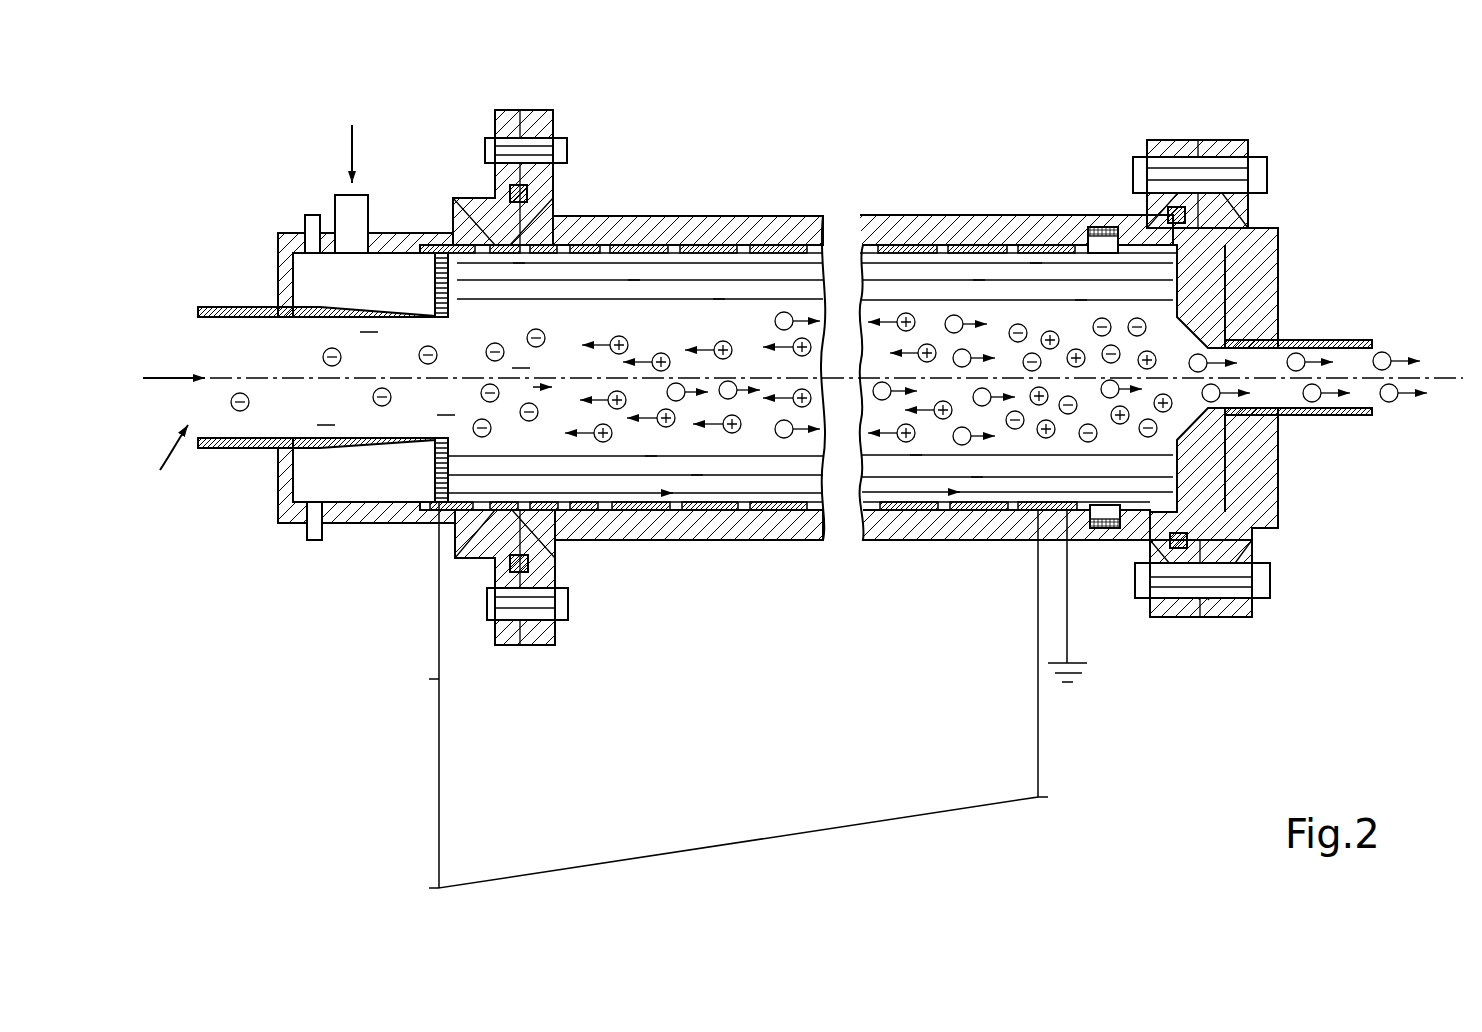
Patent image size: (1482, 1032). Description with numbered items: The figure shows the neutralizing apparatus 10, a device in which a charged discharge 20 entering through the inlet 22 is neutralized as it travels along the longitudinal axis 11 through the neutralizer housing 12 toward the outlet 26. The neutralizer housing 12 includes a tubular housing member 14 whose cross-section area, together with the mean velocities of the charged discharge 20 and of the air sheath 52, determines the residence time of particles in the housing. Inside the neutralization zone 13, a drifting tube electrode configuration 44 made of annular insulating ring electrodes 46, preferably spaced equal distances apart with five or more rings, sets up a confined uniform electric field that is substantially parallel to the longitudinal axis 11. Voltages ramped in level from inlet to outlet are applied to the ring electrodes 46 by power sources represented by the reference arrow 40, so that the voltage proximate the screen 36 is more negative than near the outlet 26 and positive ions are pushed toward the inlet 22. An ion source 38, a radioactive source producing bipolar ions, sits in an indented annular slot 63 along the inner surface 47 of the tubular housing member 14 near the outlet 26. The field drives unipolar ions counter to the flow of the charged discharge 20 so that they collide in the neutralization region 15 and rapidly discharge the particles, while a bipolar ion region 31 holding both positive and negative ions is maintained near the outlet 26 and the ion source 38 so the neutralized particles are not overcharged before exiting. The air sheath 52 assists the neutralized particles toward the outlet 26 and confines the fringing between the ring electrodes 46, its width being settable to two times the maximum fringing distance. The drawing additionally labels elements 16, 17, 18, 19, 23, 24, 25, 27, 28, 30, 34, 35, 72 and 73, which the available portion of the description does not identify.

The neutralizing apparatus 10 is at (1038, 125).
The longitudinal axis 11 is at (287, 375).
The neutralizer housing 12 is at (927, 195).
The neutralization zone 13 is at (742, 318).
The tubular housing member 14 is at (678, 216).
The neutralization region 15 is at (537, 433).
The inlet housing 16 is at (390, 232).
The inlet clamp 17 is at (487, 147).
The outlet flange 18 is at (1278, 225).
The outlet clamp 19 is at (1267, 175).
The charged discharge 20 is at (148, 377).
The inlet 22 is at (156, 457).
The lower inlet plate 23 is at (217, 448).
The neutralized particle outlet flow 24 is at (1307, 340).
The upper inlet plate 25 is at (280, 307).
The outlet 26 is at (1383, 407).
The gas passage 27 is at (350, 311).
The sheath gas supply 28 is at (350, 136).
The gas inlet port 30 is at (335, 203).
The bipolar ion region 31 is at (1027, 438).
The lower housing cavity 34 is at (340, 487).
The lower outlet tube 35 is at (1280, 417).
The screen 36 is at (435, 280).
The ion source 38 is at (1095, 528).
The power sources 40 is at (1000, 838).
The drifting tube electrode configuration 44 is at (708, 237).
The annular insulating ring electrodes 46 is at (480, 245).
The inner surface 47 is at (885, 510).
The air sheath 52 is at (742, 277).
The indented annular slot 63 is at (1112, 530).
The O-ring seal 72 is at (527, 193).
The O-ring seal 73 is at (1168, 215).